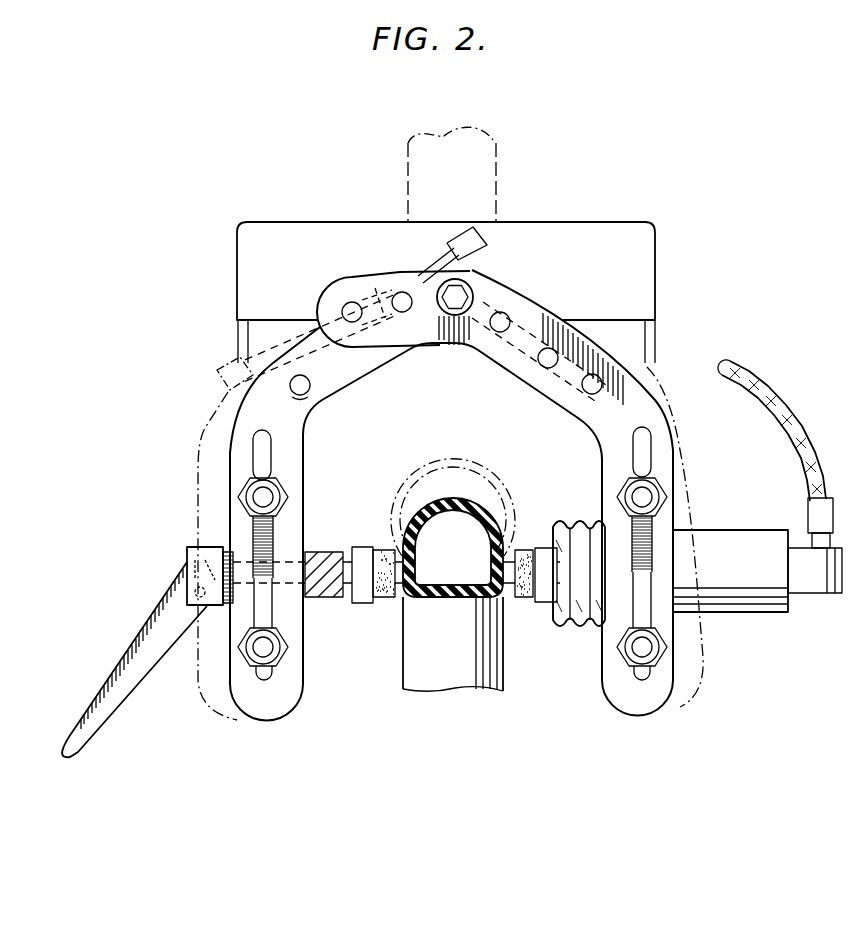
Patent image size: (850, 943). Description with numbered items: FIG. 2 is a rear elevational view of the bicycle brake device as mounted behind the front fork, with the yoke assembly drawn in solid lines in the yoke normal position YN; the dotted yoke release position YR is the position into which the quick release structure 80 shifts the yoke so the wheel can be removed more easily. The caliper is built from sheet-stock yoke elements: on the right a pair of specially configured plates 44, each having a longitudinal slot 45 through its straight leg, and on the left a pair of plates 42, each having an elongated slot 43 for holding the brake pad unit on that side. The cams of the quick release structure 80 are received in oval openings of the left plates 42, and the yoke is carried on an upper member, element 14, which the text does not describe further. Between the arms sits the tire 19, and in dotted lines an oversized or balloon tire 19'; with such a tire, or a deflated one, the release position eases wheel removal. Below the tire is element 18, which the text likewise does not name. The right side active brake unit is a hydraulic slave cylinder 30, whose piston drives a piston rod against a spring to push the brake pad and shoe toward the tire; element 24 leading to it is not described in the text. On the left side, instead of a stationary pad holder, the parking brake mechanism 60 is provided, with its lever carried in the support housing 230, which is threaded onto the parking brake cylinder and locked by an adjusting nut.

The mounting plate 14 is at (602, 263).
The quick release structure 80 is at (335, 284).
The yoke normal position YN is at (415, 266).
The yoke release position YR is at (205, 372).
The plates 42 is at (297, 434).
The plates 44 is at (642, 408).
The elongated slot 43 is at (268, 461).
The longitudinal slot 45 is at (638, 452).
The flexible hose 24 is at (740, 368).
The hydraulic slave cylinder 30 is at (755, 569).
The support housing 230 is at (195, 548).
The parking brake mechanism 60 is at (326, 627).
The tire 19 is at (452, 525).
The tire 19' is at (473, 500).
The pipe 18 is at (463, 645).